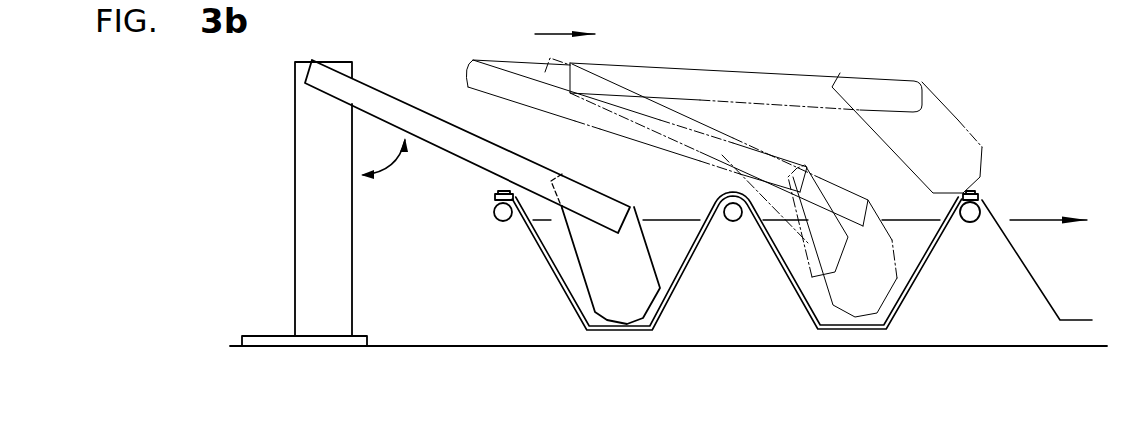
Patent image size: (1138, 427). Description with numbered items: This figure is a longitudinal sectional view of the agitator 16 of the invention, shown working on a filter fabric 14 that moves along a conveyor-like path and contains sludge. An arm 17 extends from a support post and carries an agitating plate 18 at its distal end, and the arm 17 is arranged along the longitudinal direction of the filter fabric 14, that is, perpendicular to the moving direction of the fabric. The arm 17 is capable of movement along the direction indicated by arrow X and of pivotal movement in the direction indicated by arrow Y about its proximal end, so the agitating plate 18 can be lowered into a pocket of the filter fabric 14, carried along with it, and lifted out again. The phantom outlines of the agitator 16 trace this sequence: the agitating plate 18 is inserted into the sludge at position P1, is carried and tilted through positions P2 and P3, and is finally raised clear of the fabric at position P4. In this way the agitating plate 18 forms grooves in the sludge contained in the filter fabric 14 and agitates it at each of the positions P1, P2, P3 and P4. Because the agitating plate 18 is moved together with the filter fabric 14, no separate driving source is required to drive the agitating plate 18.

The filter fabric 14 is at (681, 278).
The agitator 16 is at (756, 62).
The arm 17 is at (385, 102).
The agitating plate 18 is at (640, 257).
The agitating position P1 is at (605, 249).
The agitating position P2 is at (785, 216).
The agitating position P3 is at (845, 247).
The agitating position P4 is at (907, 133).
The arrow X is at (565, 24).
The arrow Y is at (384, 162).